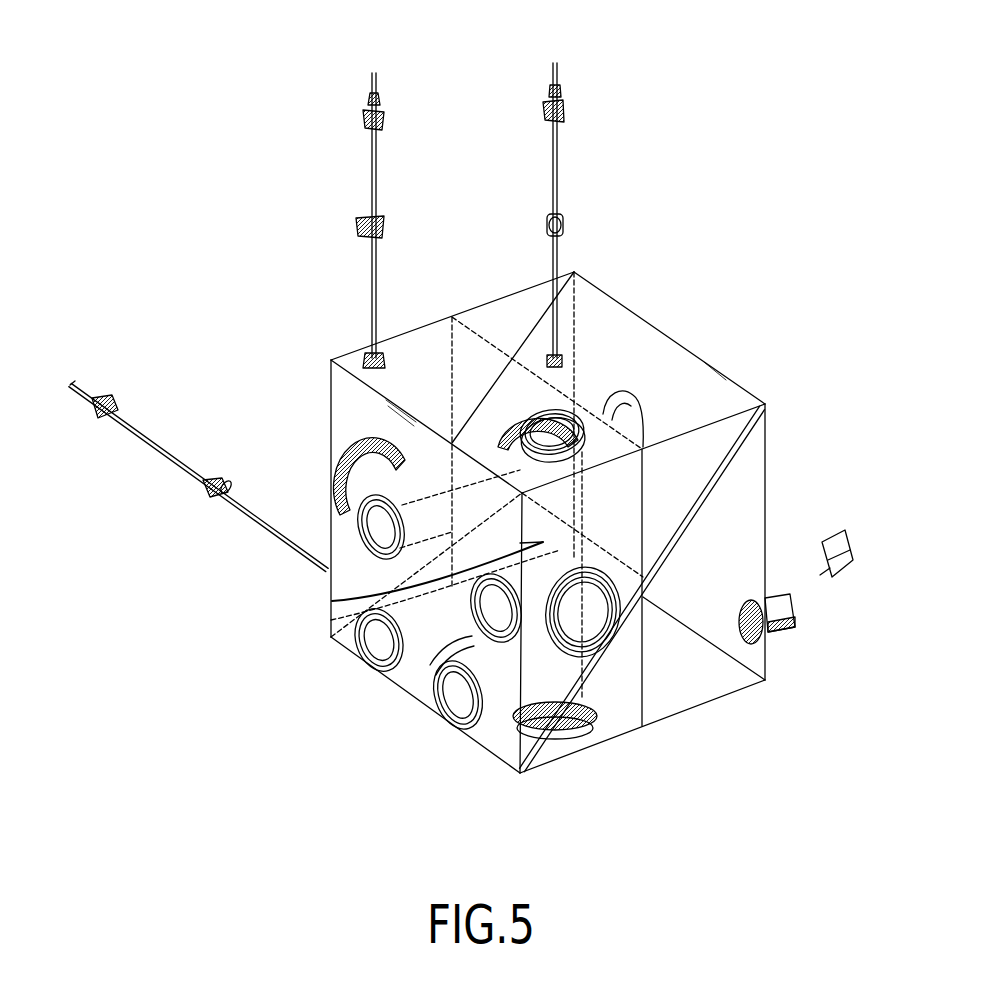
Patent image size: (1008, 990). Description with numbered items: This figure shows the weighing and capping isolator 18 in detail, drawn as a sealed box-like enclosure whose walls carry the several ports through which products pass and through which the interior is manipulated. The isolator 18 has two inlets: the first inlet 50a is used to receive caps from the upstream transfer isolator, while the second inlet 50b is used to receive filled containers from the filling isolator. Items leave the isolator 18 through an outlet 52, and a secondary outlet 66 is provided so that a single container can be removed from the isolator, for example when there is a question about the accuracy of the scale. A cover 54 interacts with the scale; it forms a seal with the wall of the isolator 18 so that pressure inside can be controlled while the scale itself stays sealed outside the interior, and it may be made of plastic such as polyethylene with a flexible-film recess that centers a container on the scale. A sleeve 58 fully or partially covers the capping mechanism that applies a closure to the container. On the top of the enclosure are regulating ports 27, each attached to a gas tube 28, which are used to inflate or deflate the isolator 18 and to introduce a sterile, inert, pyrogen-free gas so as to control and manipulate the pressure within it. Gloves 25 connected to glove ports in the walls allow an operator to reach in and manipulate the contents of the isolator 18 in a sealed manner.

The weighing and capping isolator 18 is at (718, 310).
The gloves 25 is at (386, 650).
The regulating ports 27 is at (368, 352).
The gas tube 28 is at (377, 180).
The first inlet 50a is at (337, 462).
The second inlet 50b is at (512, 392).
The outlet 52 is at (583, 655).
The cover 54 is at (470, 626).
The sleeve 58 is at (332, 601).
The secondary outlet 66 is at (773, 598).